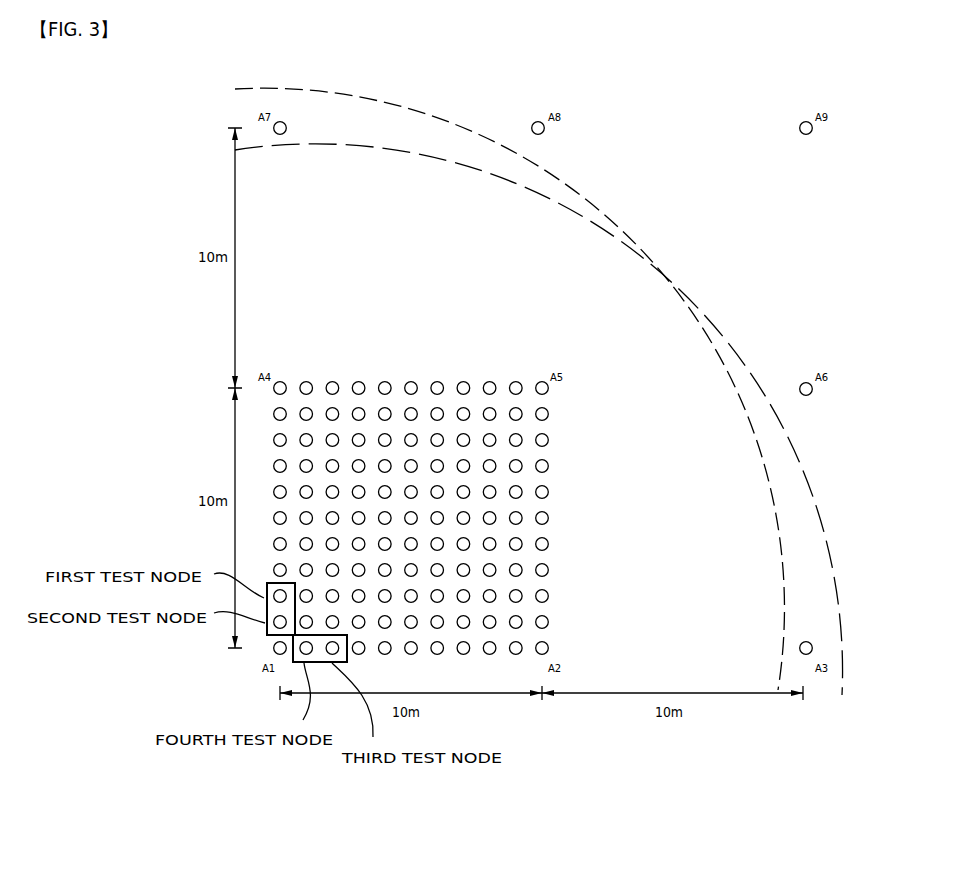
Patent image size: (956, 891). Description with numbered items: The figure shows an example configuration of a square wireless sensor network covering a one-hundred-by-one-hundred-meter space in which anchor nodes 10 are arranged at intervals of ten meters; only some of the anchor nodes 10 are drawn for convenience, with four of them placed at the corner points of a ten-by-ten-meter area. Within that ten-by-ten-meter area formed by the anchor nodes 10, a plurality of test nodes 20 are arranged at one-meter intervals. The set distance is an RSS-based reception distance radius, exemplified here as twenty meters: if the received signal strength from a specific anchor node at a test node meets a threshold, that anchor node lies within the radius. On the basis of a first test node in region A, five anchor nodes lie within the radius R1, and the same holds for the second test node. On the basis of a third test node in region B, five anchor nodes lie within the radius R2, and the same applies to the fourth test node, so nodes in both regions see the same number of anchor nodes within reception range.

The anchor node 10 is at (277, 402).
The test node 20 is at (273, 571).
The reception distance radius on the basis of the first test node R1 is at (566, 190).
The reception distance radius on the basis of the third test node R2 is at (745, 373).